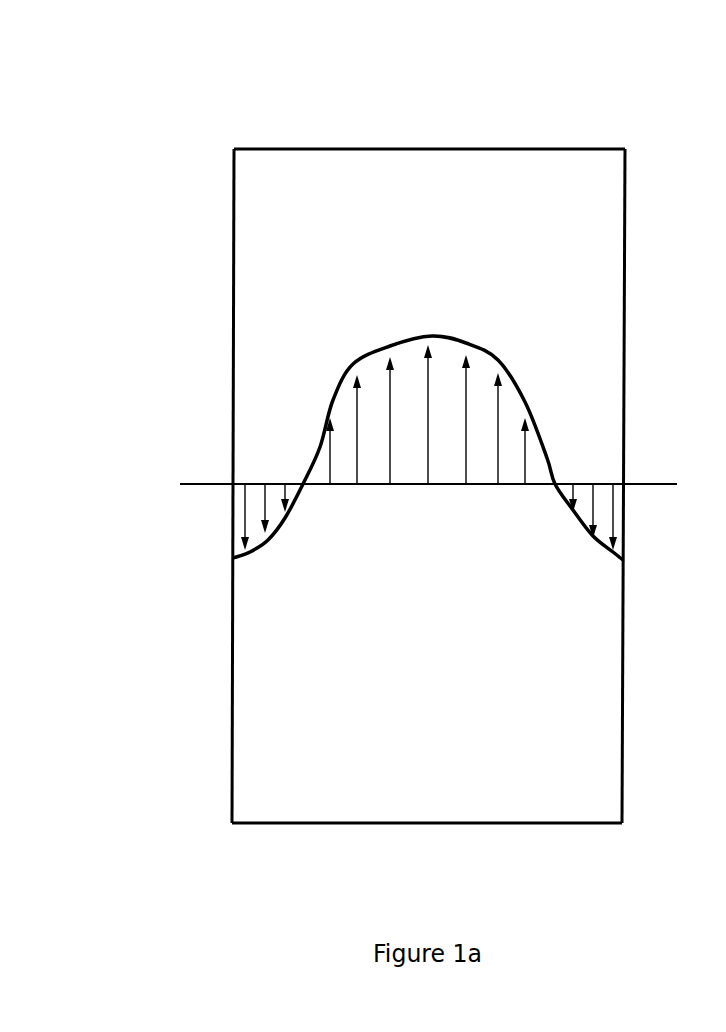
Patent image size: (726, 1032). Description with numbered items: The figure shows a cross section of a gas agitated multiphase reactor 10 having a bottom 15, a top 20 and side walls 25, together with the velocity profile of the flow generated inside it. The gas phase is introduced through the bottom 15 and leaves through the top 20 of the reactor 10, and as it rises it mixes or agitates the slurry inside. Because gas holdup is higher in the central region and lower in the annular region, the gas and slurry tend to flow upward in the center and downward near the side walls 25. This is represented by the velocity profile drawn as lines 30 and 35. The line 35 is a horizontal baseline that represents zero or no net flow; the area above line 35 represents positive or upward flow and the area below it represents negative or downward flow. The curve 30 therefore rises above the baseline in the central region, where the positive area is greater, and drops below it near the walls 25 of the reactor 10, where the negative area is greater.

The gas agitated multiphase reactor 10 is at (150, 198).
The bottom 15 is at (282, 823).
The top 20 is at (553, 148).
The side walls 25 is at (231, 720).
The velocity profile line 30 is at (332, 398).
The baseline line 35 is at (193, 484).